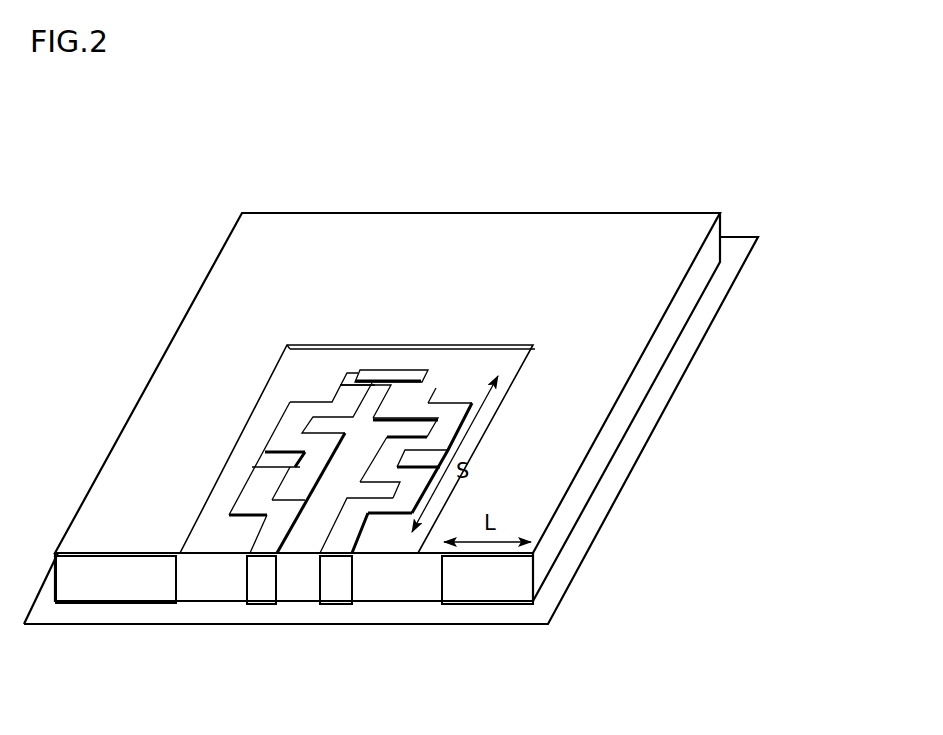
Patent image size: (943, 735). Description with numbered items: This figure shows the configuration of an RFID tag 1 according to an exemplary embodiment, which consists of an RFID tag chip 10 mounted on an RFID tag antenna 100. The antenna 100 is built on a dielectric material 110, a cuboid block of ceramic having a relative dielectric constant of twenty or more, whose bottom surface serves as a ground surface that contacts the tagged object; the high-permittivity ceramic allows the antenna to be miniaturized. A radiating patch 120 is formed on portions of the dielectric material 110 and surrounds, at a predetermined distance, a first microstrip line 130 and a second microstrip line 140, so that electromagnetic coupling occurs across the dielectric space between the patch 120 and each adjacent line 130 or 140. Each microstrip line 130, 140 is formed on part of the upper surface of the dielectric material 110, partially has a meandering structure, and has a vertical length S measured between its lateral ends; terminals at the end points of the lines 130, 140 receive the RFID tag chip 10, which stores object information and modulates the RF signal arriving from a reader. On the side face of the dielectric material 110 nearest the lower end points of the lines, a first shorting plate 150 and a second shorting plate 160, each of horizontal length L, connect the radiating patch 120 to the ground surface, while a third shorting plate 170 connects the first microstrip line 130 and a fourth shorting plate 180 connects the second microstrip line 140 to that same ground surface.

The RFID tag 1 is at (548, 152).
The RFID tag antenna 100 is at (477, 212).
The dielectric material 110 is at (650, 369).
The radiating patch 120 is at (237, 296).
The first microstrip line 130 is at (342, 380).
The RFID tag chip 10 is at (385, 374).
The second microstrip line 140 is at (452, 401).
The first shorting plate 150 is at (123, 595).
The second shorting plate 160 is at (482, 573).
The third shorting plate 170 is at (263, 585).
The fourth shorting plate 180 is at (333, 578).